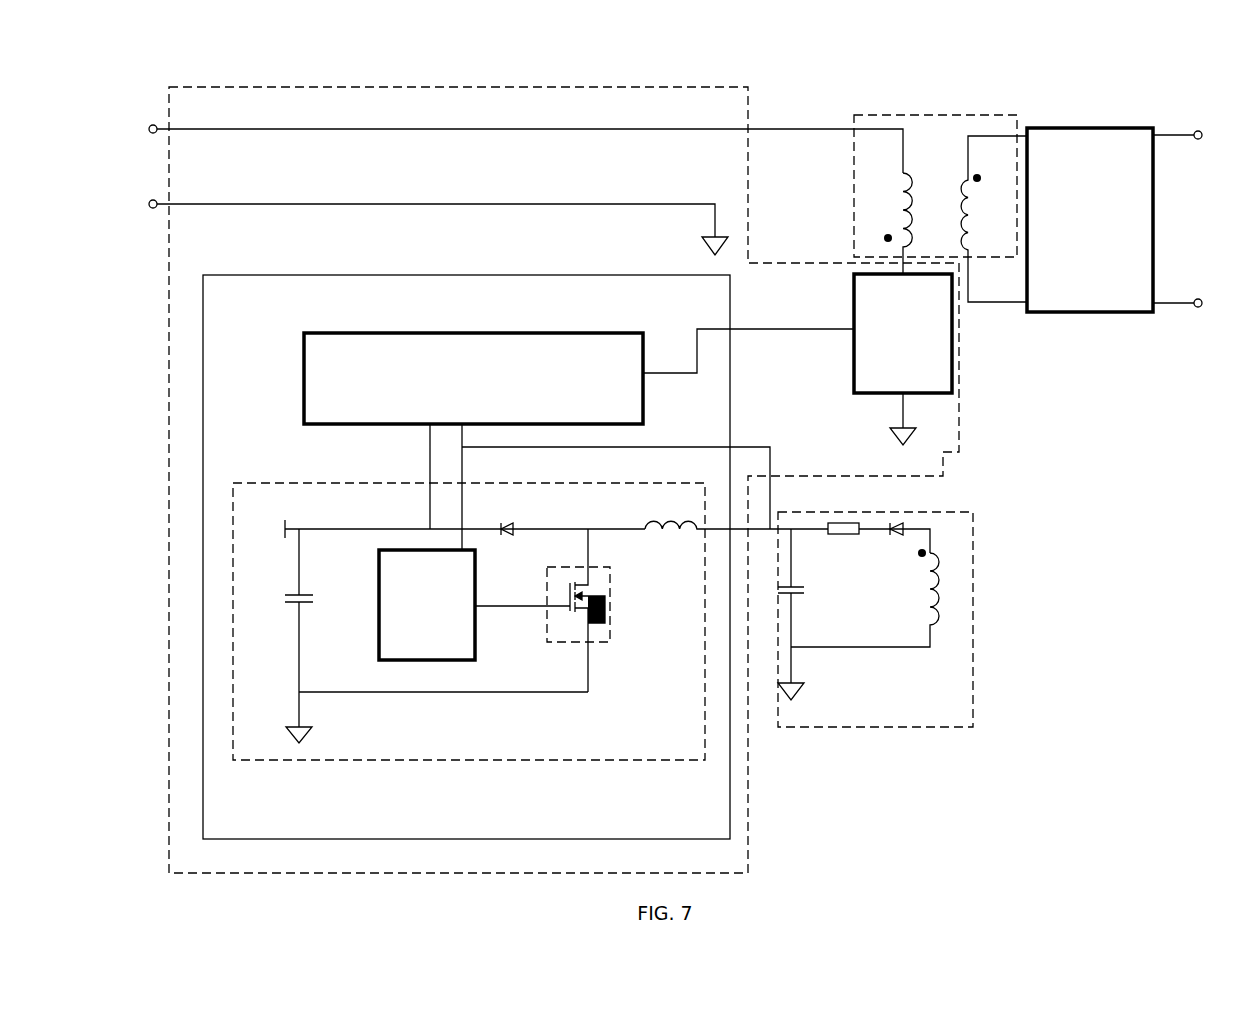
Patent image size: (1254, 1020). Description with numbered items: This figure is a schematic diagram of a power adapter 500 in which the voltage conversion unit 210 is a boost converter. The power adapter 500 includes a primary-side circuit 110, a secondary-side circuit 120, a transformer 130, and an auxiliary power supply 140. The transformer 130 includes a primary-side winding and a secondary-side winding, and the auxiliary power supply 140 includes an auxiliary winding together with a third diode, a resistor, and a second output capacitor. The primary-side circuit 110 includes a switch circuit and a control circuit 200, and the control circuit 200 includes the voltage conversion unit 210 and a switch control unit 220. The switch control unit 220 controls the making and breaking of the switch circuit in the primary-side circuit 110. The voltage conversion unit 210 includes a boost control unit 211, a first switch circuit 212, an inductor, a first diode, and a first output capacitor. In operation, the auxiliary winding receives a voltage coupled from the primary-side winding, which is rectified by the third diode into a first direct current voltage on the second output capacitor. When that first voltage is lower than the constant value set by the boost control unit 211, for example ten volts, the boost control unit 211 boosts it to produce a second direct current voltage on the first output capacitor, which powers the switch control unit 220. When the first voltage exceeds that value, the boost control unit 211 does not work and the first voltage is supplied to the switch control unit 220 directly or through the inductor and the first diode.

The power adapter 500 is at (217, 53).
The primary-side circuit 110 is at (680, 87).
The secondary-side circuit 120 is at (1048, 128).
The transformer 130 is at (988, 115).
The auxiliary power supply 140 is at (979, 515).
The control circuit 200 is at (245, 275).
The voltage conversion unit 210 is at (234, 483).
The boost control unit 211 is at (476, 582).
The first switch circuit 212 is at (612, 605).
The switch control unit 220 is at (607, 333).